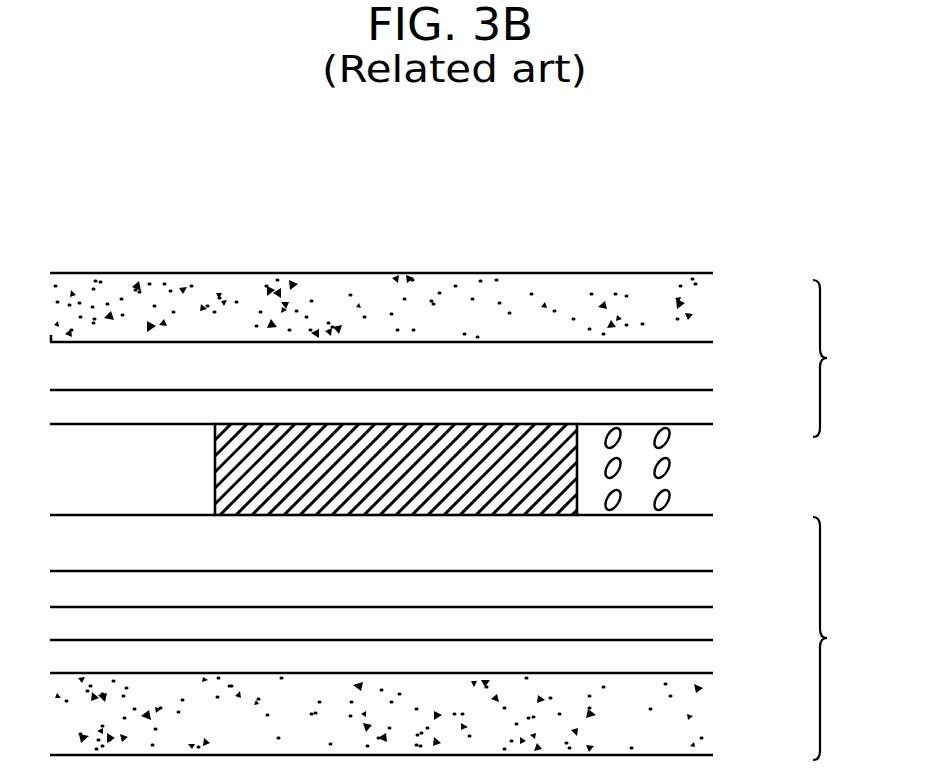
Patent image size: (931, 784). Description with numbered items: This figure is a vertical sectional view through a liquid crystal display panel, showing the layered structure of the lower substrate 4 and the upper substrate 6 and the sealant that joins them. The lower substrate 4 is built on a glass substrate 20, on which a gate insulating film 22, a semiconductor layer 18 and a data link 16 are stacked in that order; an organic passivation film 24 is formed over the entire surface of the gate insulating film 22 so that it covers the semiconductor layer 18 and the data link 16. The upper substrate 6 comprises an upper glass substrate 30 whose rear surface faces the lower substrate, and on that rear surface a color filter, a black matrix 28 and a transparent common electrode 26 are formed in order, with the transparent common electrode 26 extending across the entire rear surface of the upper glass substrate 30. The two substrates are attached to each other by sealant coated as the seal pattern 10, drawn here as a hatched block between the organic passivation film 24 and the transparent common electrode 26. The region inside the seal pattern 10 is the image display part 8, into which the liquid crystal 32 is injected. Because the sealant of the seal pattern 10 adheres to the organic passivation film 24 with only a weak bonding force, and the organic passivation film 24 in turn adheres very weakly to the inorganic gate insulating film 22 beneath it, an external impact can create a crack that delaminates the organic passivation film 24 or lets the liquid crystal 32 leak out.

The upper glass substrate 30 is at (700, 309).
The black matrix 28 is at (705, 368).
The transparent common electrode 26 is at (712, 414).
The seal pattern 10 is at (215, 485).
The image display part 8 is at (710, 450).
The liquid crystal 32 is at (670, 466).
The organic passivation film 24 is at (710, 539).
The data link 16 is at (705, 586).
The semiconductor layer 18 is at (705, 619).
The gate insulating film 22 is at (710, 656).
The glass substrate 20 is at (708, 722).
The upper substrate 6 is at (834, 358).
The lower substrate 4 is at (834, 638).